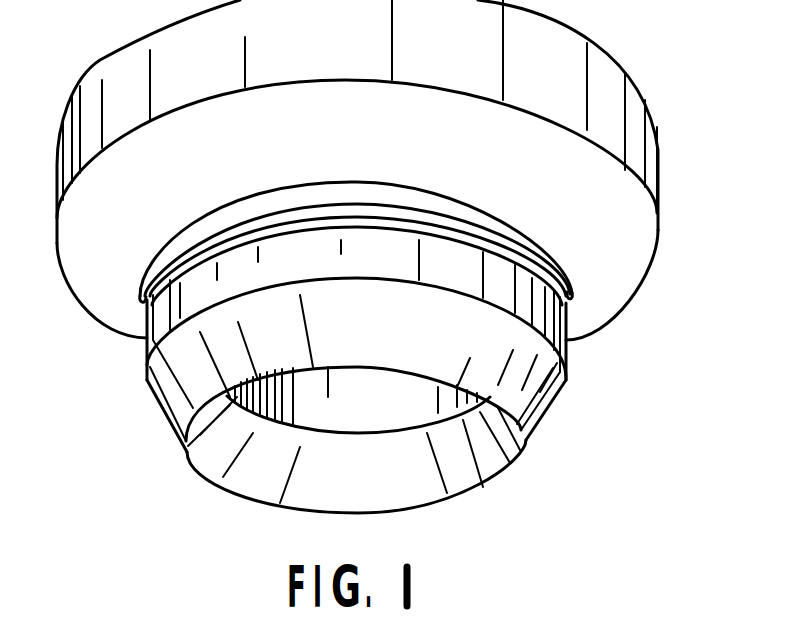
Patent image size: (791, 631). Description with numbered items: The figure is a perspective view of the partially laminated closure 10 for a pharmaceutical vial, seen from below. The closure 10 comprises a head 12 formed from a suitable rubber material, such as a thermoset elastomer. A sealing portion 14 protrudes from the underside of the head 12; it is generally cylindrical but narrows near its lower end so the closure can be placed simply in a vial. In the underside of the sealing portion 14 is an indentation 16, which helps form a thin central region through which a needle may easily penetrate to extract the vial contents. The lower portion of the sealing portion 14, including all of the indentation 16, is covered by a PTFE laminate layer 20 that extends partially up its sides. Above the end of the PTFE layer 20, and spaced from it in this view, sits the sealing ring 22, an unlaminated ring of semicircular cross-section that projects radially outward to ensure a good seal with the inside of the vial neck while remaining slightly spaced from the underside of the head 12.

The closure 10 is at (662, 38).
The head 12 is at (665, 225).
The sealing portion 14 is at (153, 305).
The indentation 16 is at (402, 413).
The PTFE laminate layer 20 is at (553, 403).
The sealing ring 22 is at (573, 291).